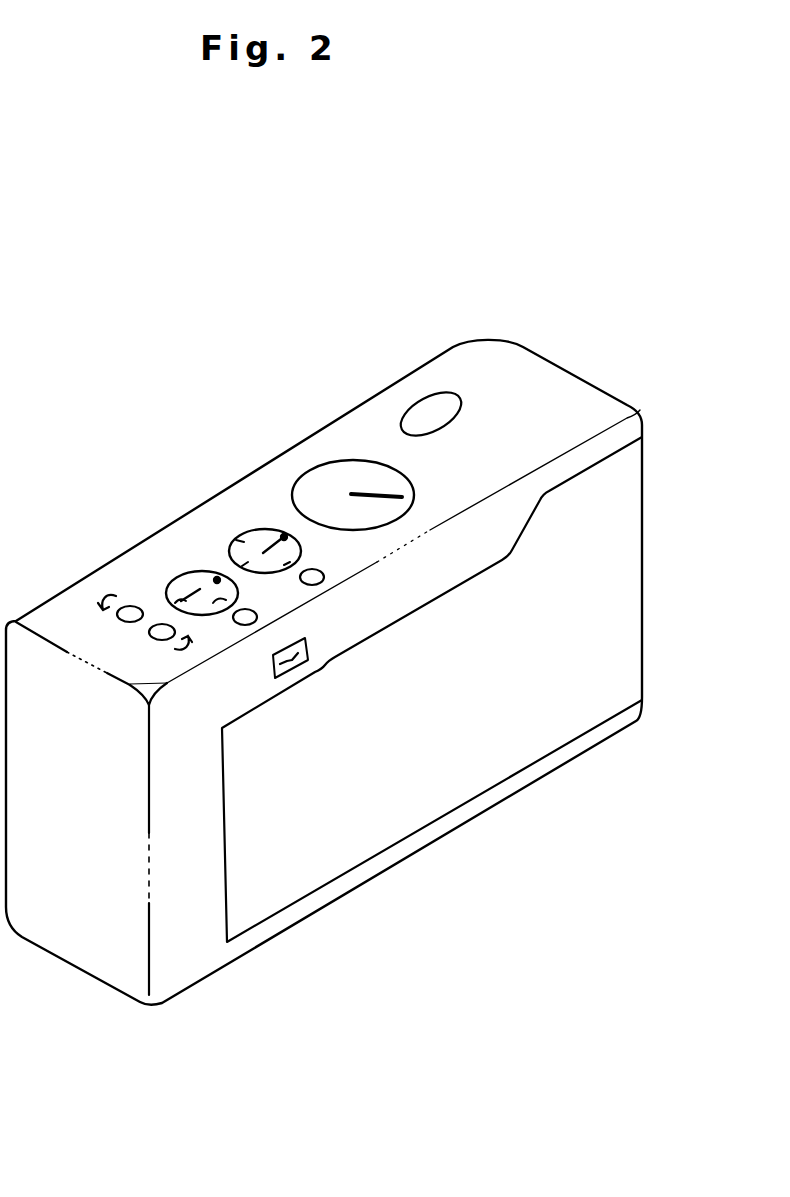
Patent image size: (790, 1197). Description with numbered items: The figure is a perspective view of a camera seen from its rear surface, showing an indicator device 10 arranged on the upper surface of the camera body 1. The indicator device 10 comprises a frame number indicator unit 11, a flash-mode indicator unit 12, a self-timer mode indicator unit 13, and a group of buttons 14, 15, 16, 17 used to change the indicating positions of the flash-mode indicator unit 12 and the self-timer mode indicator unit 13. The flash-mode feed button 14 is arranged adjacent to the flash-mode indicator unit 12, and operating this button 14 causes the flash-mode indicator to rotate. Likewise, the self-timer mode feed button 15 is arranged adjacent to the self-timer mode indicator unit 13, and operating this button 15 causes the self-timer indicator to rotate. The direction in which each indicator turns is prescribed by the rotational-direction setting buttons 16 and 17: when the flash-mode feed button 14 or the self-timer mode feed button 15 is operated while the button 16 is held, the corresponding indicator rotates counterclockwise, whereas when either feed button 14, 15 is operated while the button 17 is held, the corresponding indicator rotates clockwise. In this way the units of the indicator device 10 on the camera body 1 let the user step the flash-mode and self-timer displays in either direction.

The camera body 1 is at (472, 385).
The indicator device 10 is at (242, 380).
The frame number indicator unit 11 is at (337, 480).
The flash-mode indicator unit 12 is at (262, 534).
The self-timer mode indicator unit 13 is at (193, 578).
The flash-mode feed button 14 is at (325, 580).
The self-timer mode feed button 15 is at (248, 624).
The rotational-direction setting button 16 is at (128, 606).
The rotational-direction setting button 17 is at (160, 627).